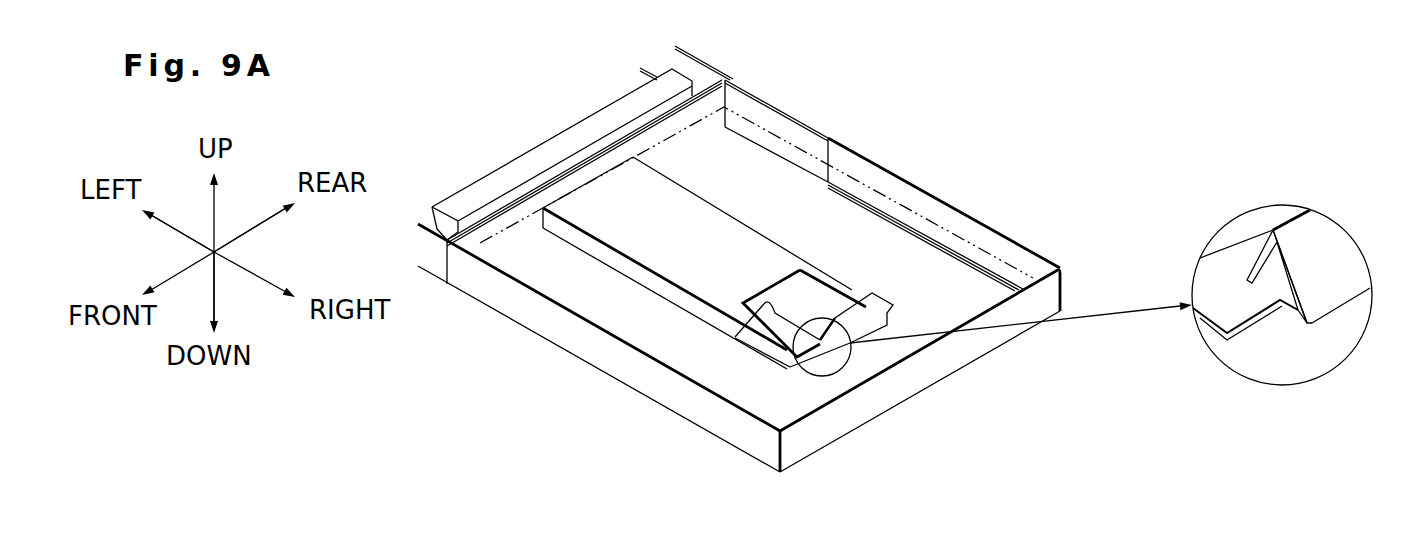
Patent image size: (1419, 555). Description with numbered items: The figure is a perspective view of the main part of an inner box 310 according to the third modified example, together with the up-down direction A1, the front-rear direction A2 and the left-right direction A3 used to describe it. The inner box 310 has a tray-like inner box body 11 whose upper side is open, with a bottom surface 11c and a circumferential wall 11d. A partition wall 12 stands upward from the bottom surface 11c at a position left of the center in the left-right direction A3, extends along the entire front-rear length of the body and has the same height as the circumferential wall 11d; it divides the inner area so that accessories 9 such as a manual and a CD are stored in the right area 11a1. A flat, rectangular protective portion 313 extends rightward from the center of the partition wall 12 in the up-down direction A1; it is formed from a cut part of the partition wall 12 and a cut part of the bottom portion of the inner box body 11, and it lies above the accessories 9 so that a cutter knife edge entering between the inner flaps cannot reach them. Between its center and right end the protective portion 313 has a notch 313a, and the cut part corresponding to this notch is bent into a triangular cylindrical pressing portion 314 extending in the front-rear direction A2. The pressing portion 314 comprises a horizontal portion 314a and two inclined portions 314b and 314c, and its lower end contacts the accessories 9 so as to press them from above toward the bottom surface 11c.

The accessories 9 is at (880, 190).
The inner box body 11 is at (832, 115).
The right area 11a1 is at (1018, 262).
The bottom surface 11c is at (867, 367).
The circumferential wall 11d is at (945, 360).
The partition wall 12 is at (482, 232).
The inner box 310 is at (1068, 130).
The protective portion 313 is at (660, 258).
The notch 313a is at (755, 310).
The pressing portion 314 is at (1385, 437).
The horizontal portion 314a is at (1285, 305).
The inclined portion 314b is at (1312, 270).
The inclined portion 314c is at (1247, 255).
The up-down direction A1 is at (220, 280).
The front-rear direction A2 is at (249, 236).
The left-right direction A3 is at (176, 230).